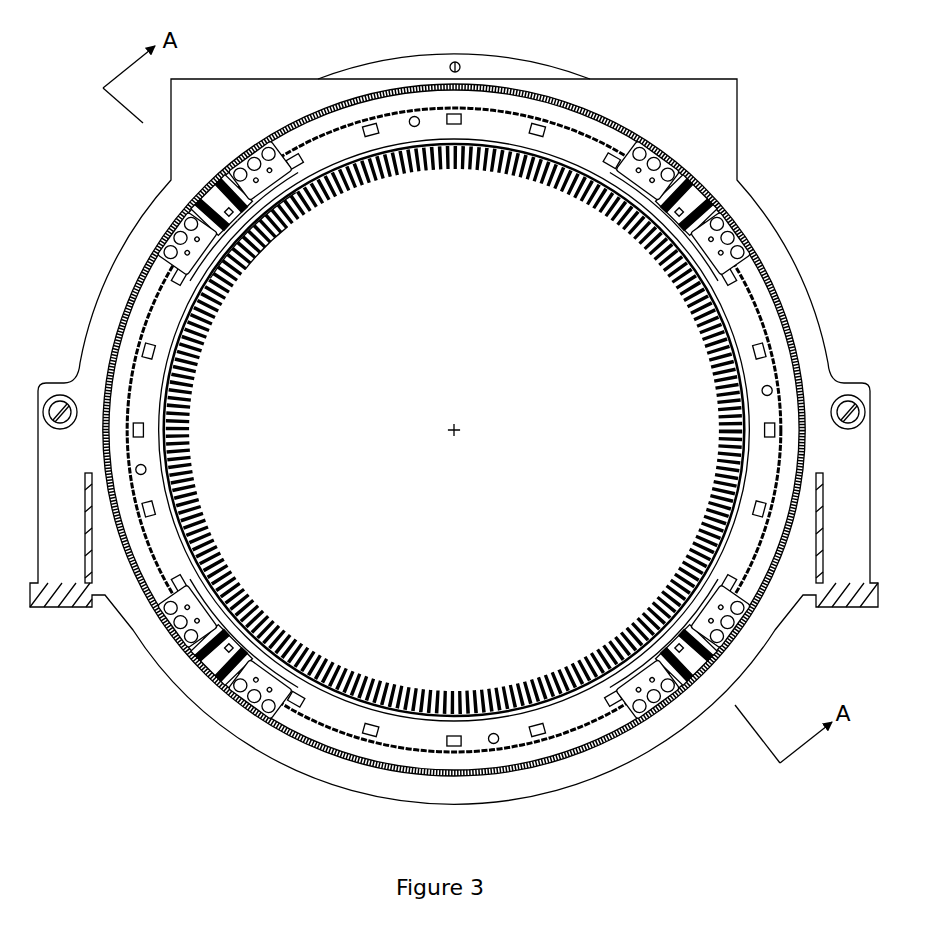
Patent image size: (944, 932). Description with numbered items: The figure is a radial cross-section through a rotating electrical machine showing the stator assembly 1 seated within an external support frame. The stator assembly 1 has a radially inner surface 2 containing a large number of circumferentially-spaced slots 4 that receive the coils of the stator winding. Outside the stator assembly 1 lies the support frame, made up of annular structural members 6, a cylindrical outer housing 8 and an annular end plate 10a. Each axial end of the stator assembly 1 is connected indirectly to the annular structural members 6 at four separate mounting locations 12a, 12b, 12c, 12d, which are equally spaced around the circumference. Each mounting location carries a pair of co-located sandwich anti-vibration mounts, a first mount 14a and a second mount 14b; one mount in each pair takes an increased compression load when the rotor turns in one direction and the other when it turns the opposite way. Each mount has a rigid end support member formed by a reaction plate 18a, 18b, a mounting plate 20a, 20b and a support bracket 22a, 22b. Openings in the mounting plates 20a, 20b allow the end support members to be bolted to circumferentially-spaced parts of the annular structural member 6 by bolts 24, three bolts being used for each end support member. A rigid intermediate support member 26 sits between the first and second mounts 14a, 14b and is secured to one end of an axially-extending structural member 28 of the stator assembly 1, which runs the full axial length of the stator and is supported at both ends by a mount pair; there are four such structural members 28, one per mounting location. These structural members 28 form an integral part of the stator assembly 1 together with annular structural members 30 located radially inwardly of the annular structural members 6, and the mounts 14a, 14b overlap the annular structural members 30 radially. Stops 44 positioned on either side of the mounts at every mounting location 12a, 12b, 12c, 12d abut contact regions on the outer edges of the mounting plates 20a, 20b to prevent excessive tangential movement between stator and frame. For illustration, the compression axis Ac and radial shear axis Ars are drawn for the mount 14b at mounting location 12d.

The stator assembly 1 is at (420, 406).
The radially inner surface 2 is at (524, 170).
The slots 4 is at (722, 366).
The annular structural members 6 is at (757, 287).
The cylindrical outer housing 8 is at (753, 255).
The annular end plate 10a is at (742, 218).
The mounting location 12a is at (290, 250).
The mounting location 12b is at (640, 254).
The mounting location 12c is at (632, 605).
The mounting location 12d is at (287, 628).
The first sandwich anti-vibration mount 14a is at (203, 208).
The second sandwich anti-vibration mount 14b is at (203, 667).
The reaction plate 18a is at (212, 215).
The reaction plate 18b is at (240, 178).
The mounting plate 20a is at (222, 300).
The mounting plate 20b is at (290, 168).
The support bracket 22a is at (233, 270).
The support bracket 22b is at (280, 203).
The bolts 24 is at (256, 158).
The rigid intermediate support member 26 is at (207, 199).
The axially-extending structural member 28 is at (265, 247).
The annular structural members 30 is at (578, 710).
The stops 44 is at (297, 153).
The compression axis Ac is at (174, 596).
The radial shear axis Ars is at (455, 430).